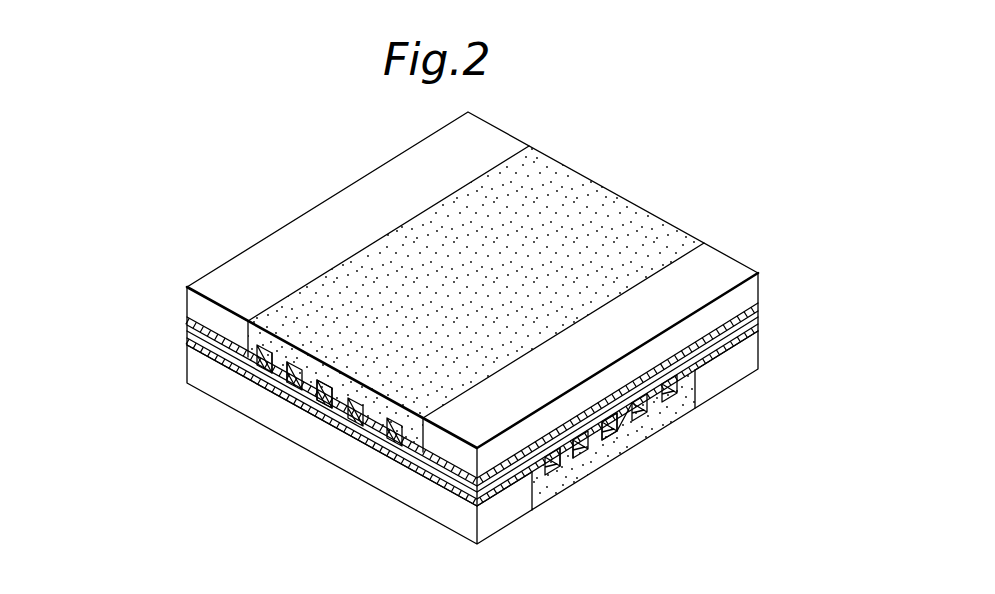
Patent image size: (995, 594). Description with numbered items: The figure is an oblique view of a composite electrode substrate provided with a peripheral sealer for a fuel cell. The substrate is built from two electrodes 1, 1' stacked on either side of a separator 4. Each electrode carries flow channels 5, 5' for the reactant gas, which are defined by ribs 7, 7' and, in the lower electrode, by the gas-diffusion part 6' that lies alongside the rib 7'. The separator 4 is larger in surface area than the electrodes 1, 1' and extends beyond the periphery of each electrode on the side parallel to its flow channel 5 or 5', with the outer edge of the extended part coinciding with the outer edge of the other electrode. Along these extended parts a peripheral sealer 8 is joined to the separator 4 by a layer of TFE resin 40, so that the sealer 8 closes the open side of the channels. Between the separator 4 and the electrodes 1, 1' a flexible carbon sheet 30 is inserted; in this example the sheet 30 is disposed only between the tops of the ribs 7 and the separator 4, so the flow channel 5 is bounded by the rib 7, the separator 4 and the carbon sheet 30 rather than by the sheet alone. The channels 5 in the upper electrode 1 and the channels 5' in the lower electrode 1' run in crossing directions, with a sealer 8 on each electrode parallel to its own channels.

The electrode 1 is at (476, 288).
The electrode 1' is at (658, 440).
The peripheral sealer 8 is at (317, 218).
The TFE resin 40 is at (187, 322).
The separator 4 is at (187, 338).
The rib 7 is at (229, 384).
The flexible carbon sheet 30 is at (320, 390).
The flow channel 5 is at (308, 435).
The rib 7' is at (580, 485).
The flow channel 5' is at (609, 464).
The gas-diffusion part 6' is at (640, 451).